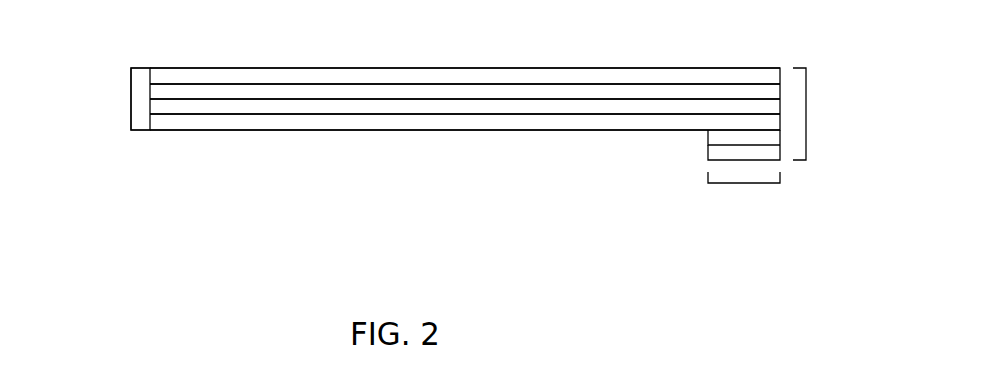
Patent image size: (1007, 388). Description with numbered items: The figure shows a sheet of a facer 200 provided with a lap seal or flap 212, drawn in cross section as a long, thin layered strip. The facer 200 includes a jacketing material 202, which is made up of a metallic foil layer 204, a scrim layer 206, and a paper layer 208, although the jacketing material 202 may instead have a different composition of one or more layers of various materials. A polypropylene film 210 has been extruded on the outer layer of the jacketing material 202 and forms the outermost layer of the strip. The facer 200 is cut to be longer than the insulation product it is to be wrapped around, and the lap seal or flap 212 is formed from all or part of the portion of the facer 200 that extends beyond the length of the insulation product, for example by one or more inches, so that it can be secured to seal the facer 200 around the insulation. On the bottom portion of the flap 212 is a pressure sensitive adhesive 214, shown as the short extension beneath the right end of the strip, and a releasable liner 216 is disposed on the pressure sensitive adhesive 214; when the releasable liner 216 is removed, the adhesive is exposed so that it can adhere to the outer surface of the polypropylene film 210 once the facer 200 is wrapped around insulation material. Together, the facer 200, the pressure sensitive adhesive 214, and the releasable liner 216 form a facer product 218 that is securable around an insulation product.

The facer 200 is at (132, 130).
The jacketing material 202 is at (110, 107).
The metallic foil layer 204 is at (465, 130).
The scrim layer 206 is at (450, 114).
The paper layer 208 is at (447, 84).
The polypropylene film 210 is at (476, 68).
The lap seal or flap 212 is at (744, 183).
The pressure sensitive adhesive 214 is at (708, 142).
The releasable liner 216 is at (708, 156).
The facer product 218 is at (806, 114).